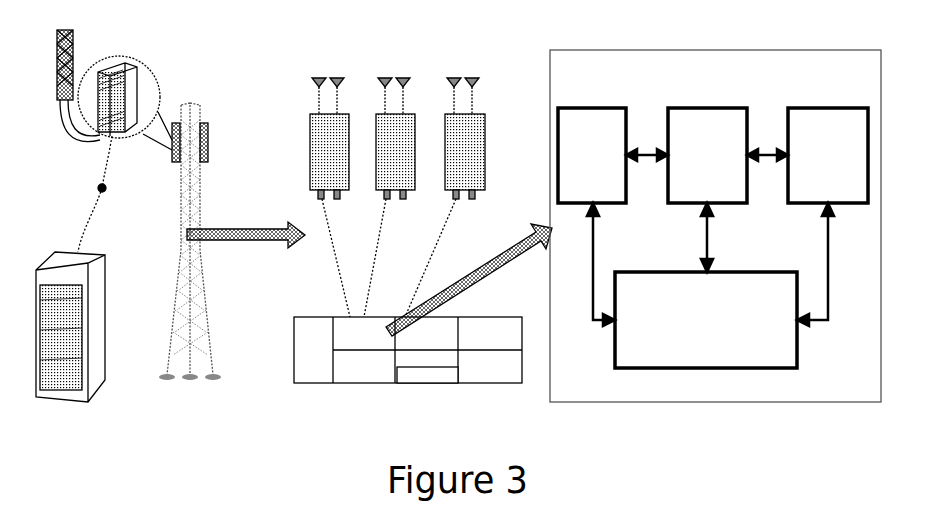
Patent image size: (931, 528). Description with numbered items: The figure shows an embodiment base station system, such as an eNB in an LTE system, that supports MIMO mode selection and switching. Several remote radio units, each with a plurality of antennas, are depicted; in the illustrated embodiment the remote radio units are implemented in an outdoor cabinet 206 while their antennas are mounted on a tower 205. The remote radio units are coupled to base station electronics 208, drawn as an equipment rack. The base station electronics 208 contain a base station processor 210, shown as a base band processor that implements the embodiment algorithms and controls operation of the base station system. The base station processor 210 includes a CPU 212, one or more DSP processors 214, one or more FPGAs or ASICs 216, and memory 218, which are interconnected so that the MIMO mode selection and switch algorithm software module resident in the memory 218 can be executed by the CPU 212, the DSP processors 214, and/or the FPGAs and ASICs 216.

The tower 205 is at (215, 327).
The outdoor cabinet 206 is at (105, 323).
The base station electronics 208 is at (437, 383).
The base station processor 210 is at (745, 50).
The CPU 212 is at (592, 155).
The DSP processor 214 is at (722, 108).
The FPGAs or ASICs 216 is at (825, 108).
The memory 218 is at (738, 272).